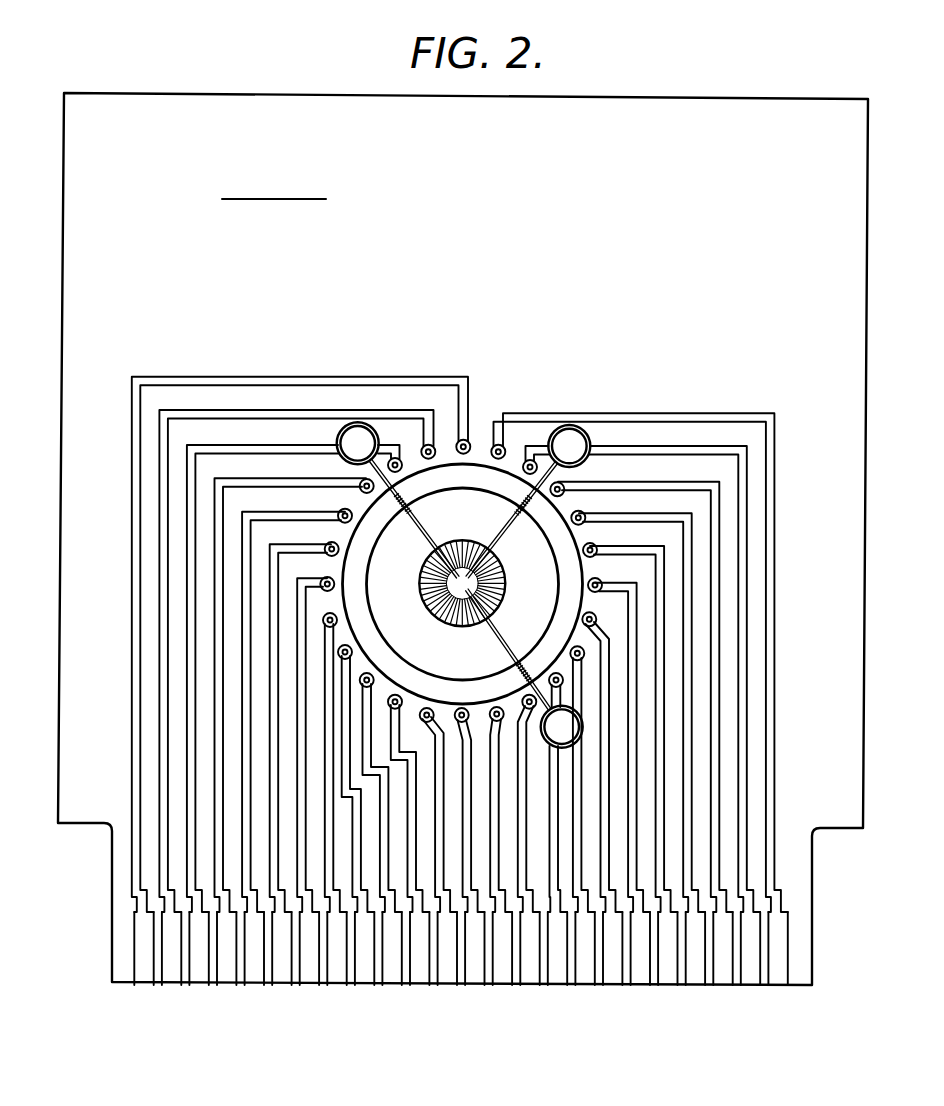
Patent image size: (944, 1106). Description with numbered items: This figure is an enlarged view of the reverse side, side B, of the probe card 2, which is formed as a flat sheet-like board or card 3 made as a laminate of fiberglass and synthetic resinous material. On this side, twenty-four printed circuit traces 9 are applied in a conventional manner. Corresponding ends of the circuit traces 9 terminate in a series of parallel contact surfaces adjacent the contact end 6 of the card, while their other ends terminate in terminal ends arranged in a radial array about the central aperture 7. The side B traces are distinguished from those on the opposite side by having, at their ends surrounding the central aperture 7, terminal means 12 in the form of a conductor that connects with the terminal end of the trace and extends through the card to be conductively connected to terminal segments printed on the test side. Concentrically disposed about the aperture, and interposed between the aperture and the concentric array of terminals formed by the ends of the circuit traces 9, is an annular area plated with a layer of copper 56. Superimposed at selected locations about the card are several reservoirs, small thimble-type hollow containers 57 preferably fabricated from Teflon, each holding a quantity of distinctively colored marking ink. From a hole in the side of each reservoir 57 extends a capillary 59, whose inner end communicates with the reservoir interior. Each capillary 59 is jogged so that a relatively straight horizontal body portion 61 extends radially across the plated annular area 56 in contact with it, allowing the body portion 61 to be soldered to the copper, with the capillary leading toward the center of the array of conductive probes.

The probe card 2 is at (751, 94).
The card 3 is at (680, 112).
The contact end 6 is at (118, 946).
The central aperture 7 is at (436, 614).
The circuit traces 9 is at (601, 404).
The terminal means 12 is at (582, 512).
The plated annular area 56 is at (358, 583).
The reservoir 57 is at (364, 437).
The capillary 59 is at (434, 537).
The body portion of capillary 61 is at (526, 510).